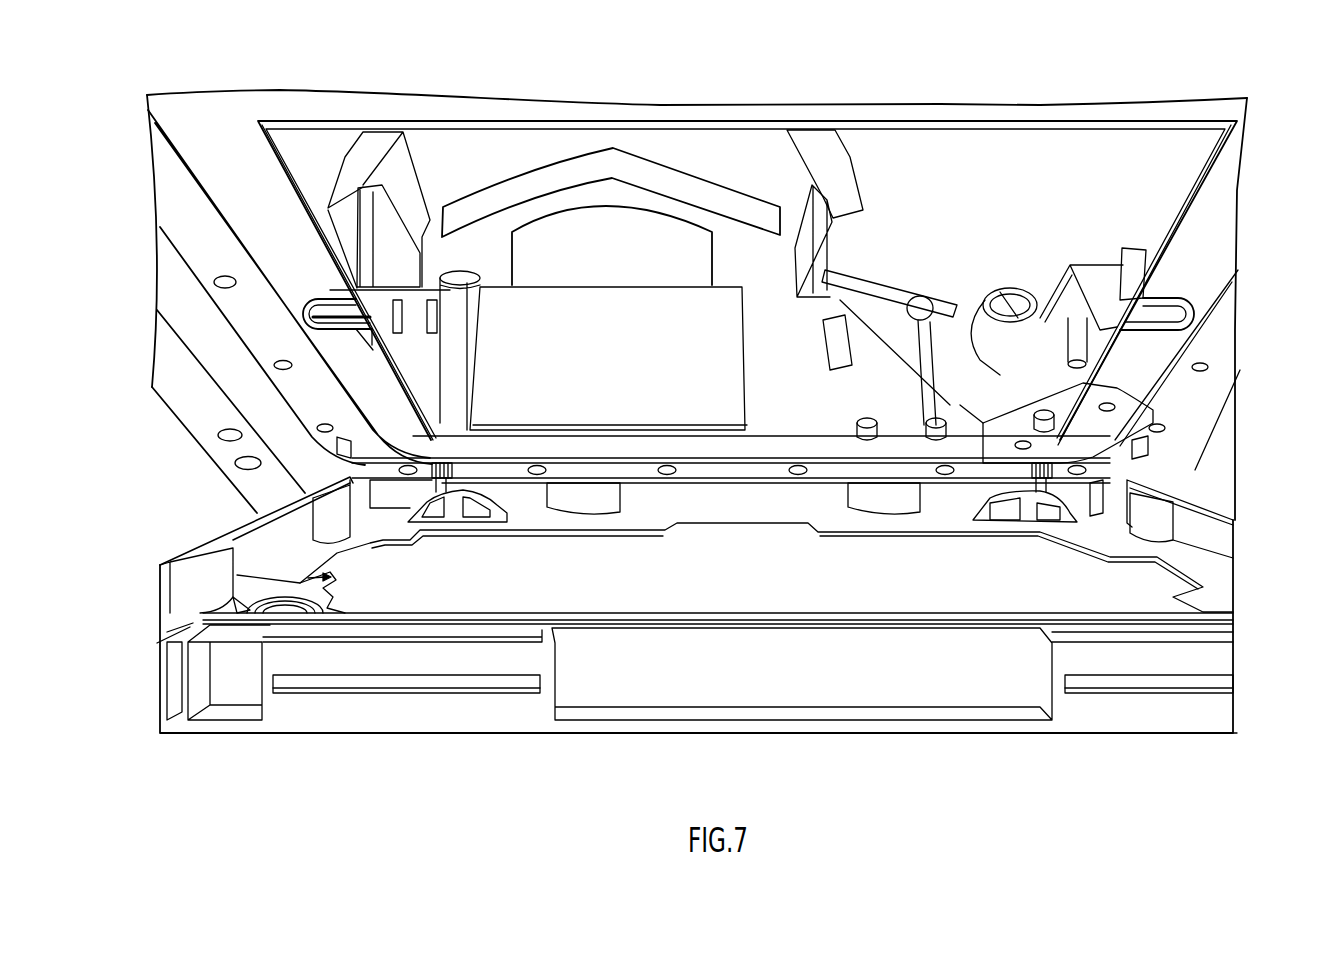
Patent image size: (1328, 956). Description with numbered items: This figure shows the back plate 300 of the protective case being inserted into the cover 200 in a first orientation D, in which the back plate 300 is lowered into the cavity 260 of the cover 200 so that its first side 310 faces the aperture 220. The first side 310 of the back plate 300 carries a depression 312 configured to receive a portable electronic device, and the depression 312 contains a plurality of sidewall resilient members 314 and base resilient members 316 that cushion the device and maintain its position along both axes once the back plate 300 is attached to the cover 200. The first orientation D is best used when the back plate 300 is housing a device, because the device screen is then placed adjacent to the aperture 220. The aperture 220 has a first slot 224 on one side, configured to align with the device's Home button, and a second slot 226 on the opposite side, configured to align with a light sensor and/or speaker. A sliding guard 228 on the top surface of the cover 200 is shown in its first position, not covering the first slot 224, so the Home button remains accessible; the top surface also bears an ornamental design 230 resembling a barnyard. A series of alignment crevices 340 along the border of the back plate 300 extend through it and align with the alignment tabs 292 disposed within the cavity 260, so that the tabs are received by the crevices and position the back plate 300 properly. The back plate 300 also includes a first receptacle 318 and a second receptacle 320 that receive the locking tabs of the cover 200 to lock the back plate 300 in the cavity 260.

The cover 200 is at (140, 135).
The aperture 220 is at (1193, 187).
The first slot 224 is at (302, 304).
The second slot 226 is at (1175, 329).
The sliding guard 228 is at (343, 328).
The ornamental design 230 is at (898, 199).
The cavity 260 is at (217, 393).
The alignment tabs 292 is at (340, 440).
The back plate 300 is at (205, 753).
The first side 310 is at (1150, 590).
The depression 312 is at (193, 612).
The sidewall resilient members 314 is at (200, 577).
The base resilient members 316 is at (507, 507).
The first receptacle 318 is at (455, 680).
The second receptacle 320 is at (1135, 676).
The alignment crevices 340 is at (313, 500).
The first orientation D is at (1183, 748).